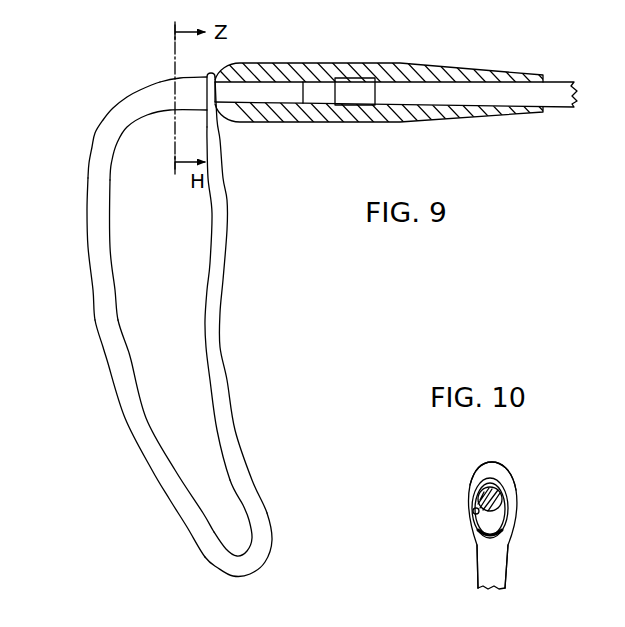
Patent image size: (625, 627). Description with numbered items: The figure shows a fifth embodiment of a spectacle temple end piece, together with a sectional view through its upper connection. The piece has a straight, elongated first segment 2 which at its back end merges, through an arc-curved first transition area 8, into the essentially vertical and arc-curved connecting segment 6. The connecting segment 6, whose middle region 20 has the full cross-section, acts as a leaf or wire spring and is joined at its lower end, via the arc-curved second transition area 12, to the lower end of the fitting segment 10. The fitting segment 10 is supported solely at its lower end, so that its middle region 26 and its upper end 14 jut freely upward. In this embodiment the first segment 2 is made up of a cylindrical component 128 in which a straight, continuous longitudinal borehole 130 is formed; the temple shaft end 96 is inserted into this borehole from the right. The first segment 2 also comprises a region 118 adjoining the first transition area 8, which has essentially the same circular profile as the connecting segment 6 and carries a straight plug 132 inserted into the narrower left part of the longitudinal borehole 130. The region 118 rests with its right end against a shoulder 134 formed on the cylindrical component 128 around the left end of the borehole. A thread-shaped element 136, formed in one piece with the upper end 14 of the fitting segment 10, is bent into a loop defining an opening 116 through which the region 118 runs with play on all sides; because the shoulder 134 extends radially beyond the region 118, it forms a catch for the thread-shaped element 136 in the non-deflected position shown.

In FIG. 9, the first segment 2 is at (377, 58).
In FIG. 10, the first segment 2 is at (503, 460).
In FIG. 9, the connecting segment 6 is at (93, 319).
In FIG. 9, the first transition area 8 is at (112, 118).
In FIG. 9, the fitting segment 10 is at (227, 335).
In FIG. 9, the second transition area 12 is at (258, 562).
In FIG. 9, the upper end 14 is at (219, 62).
In FIG. 10, the upper end 14 is at (470, 544).
In FIG. 9, the middle region 20 is at (133, 415).
In FIG. 9, the middle region 26 is at (224, 290).
In FIG. 10, the middle region 26 is at (490, 573).
In FIG. 9, the temple shaft end 96 is at (503, 98).
In FIG. 10, the opening 116 is at (474, 511).
In FIG. 9, the region 118 is at (158, 74).
In FIG. 10, the region 118 is at (484, 495).
In FIG. 9, the cylindrical component 128 is at (443, 70).
In FIG. 9, the longitudinal borehole 130 is at (361, 106).
In FIG. 9, the plug 132 is at (292, 90).
In FIG. 10, the plug 132 is at (482, 470).
In FIG. 9, the shoulder 134 is at (222, 108).
In FIG. 10, the thread-shaped element 136 is at (473, 527).